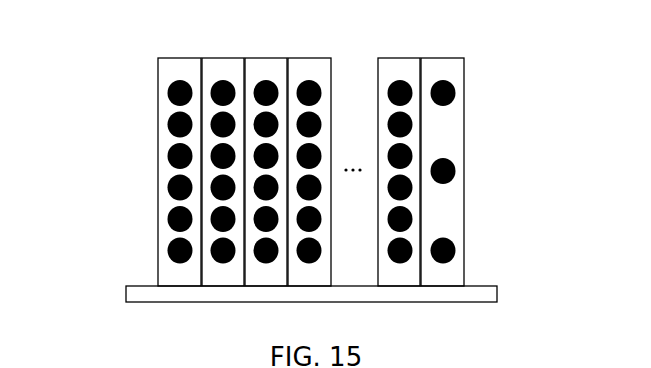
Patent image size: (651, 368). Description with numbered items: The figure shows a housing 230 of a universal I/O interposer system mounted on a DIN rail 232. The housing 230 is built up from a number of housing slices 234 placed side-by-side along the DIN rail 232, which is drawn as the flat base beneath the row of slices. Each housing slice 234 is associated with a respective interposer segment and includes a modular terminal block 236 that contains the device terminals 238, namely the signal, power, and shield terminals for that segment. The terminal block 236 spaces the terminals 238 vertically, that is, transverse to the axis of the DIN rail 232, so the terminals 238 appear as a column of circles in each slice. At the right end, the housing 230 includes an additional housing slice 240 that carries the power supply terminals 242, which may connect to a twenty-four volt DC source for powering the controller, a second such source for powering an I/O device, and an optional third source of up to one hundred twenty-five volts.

The housing 230 is at (158, 90).
The DIN rail 232 is at (126, 292).
The housing slices 234 is at (397, 58).
The modular terminal block 236 is at (223, 76).
The device terminals 238 is at (168, 188).
The additional housing slice 240 is at (455, 91).
The power supply terminals 242 is at (455, 170).